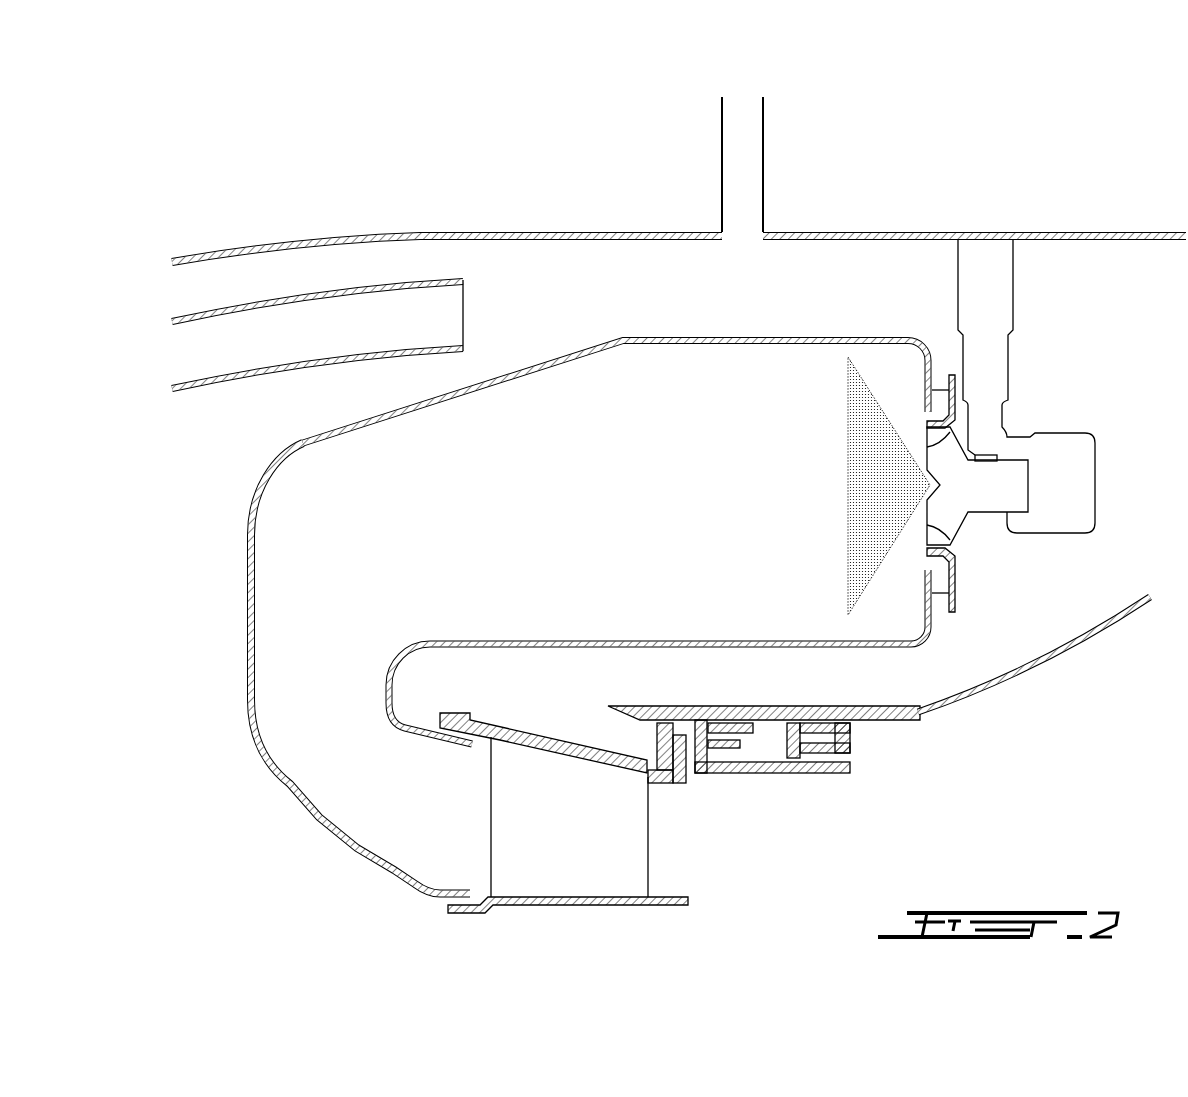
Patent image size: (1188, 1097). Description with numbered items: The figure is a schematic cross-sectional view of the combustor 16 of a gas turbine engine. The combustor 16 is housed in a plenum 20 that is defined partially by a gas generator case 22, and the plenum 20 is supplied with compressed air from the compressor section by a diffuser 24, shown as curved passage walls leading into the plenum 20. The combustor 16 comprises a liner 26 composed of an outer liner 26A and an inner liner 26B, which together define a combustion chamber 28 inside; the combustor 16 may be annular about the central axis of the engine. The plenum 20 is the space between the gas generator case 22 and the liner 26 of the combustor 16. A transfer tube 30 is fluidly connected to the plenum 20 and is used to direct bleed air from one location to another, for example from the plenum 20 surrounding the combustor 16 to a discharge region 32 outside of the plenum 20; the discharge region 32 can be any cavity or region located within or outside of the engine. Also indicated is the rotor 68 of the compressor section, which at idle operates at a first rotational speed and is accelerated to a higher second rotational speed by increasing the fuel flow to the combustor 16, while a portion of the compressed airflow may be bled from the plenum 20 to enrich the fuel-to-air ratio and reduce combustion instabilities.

The combustor 16 is at (785, 270).
The plenum 20 is at (572, 299).
The gas generator case 22 is at (883, 232).
The diffuser 24 is at (388, 281).
The liner 26 is at (298, 439).
The outer liner 26A is at (683, 336).
The inner liner 26B is at (807, 648).
The combustion chamber 28 is at (672, 514).
The transfer tube 30 is at (768, 117).
The discharge region 32 is at (764, 70).
The rotor 68 is at (543, 873).